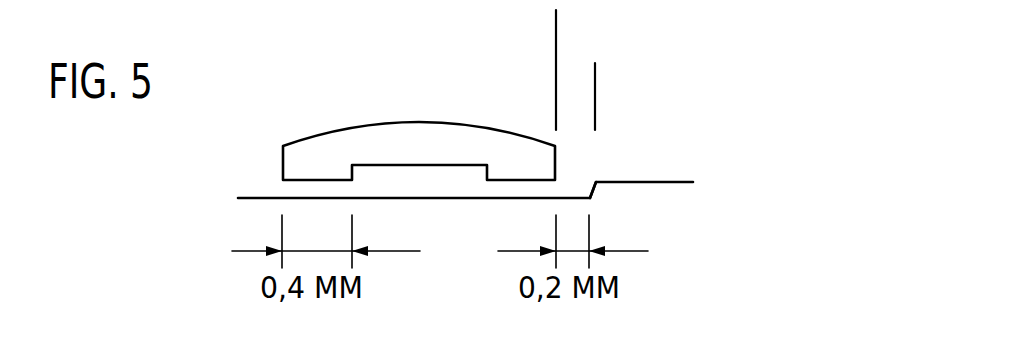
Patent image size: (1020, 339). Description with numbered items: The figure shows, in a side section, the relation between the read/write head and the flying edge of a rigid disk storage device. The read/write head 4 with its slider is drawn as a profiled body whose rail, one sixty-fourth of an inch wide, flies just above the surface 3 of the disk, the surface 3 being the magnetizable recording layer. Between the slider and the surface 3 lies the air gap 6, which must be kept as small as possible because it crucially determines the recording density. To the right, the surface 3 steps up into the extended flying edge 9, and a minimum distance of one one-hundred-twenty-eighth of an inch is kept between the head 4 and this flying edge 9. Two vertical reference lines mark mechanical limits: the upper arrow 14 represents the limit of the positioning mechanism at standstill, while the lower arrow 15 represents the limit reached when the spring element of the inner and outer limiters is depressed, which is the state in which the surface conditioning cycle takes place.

The surface 3 is at (238, 197).
The read/write head 4 is at (377, 137).
The air gap 6 is at (293, 190).
The extended flying edge 9 is at (594, 190).
The upper arrow 14 is at (556, 26).
The lower arrow 15 is at (595, 73).